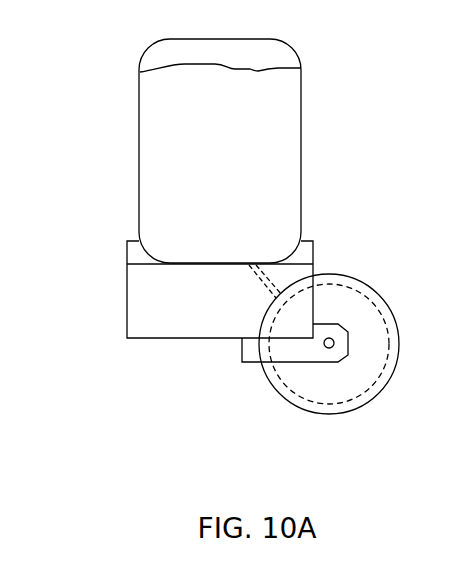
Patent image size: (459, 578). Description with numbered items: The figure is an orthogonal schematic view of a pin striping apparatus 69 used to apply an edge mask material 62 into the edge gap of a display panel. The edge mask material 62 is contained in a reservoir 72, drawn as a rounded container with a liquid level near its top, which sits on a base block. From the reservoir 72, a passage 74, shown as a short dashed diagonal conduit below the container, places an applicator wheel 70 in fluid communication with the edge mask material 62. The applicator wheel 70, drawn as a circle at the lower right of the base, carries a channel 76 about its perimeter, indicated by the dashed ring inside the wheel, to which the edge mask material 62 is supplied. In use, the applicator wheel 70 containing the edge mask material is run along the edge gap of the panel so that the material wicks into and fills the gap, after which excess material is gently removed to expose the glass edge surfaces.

The pin striping apparatus 69 is at (192, 143).
The edge mask material 62 is at (150, 164).
The reservoir 72 is at (302, 93).
The passage 74 is at (258, 278).
The applicator wheel 70 is at (375, 282).
The channel 76 is at (375, 392).